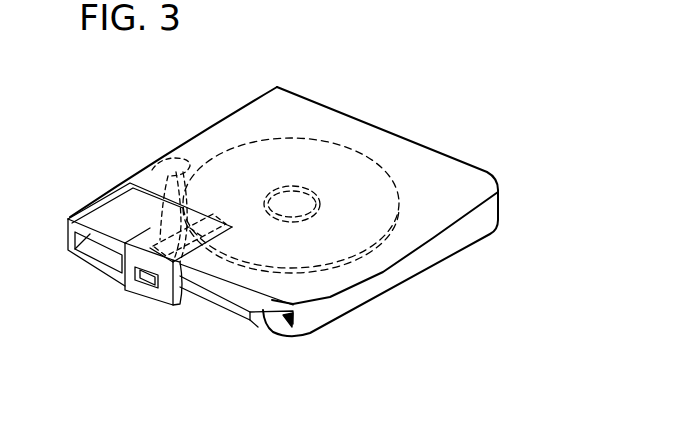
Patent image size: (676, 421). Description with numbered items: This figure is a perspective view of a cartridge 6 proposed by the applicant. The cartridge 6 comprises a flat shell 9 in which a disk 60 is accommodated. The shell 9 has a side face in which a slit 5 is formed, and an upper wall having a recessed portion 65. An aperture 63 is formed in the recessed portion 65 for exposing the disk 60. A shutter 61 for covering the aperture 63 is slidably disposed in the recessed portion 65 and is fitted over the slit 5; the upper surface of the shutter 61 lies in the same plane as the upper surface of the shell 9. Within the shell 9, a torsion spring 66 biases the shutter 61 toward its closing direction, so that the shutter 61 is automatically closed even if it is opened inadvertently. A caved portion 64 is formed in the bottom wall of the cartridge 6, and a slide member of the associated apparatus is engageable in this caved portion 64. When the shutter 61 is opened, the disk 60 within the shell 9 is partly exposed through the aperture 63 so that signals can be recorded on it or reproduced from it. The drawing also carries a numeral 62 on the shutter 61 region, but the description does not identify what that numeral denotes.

The slit 5 is at (259, 298).
The cartridge 6 is at (478, 125).
The shell 9 is at (428, 162).
The disk 60 is at (349, 167).
The shutter 61 is at (166, 295).
The slot 62 is at (146, 284).
The aperture 63 is at (182, 265).
The caved portion 64 is at (258, 324).
The recessed portion 65 is at (113, 188).
The torsion spring 66 is at (176, 158).